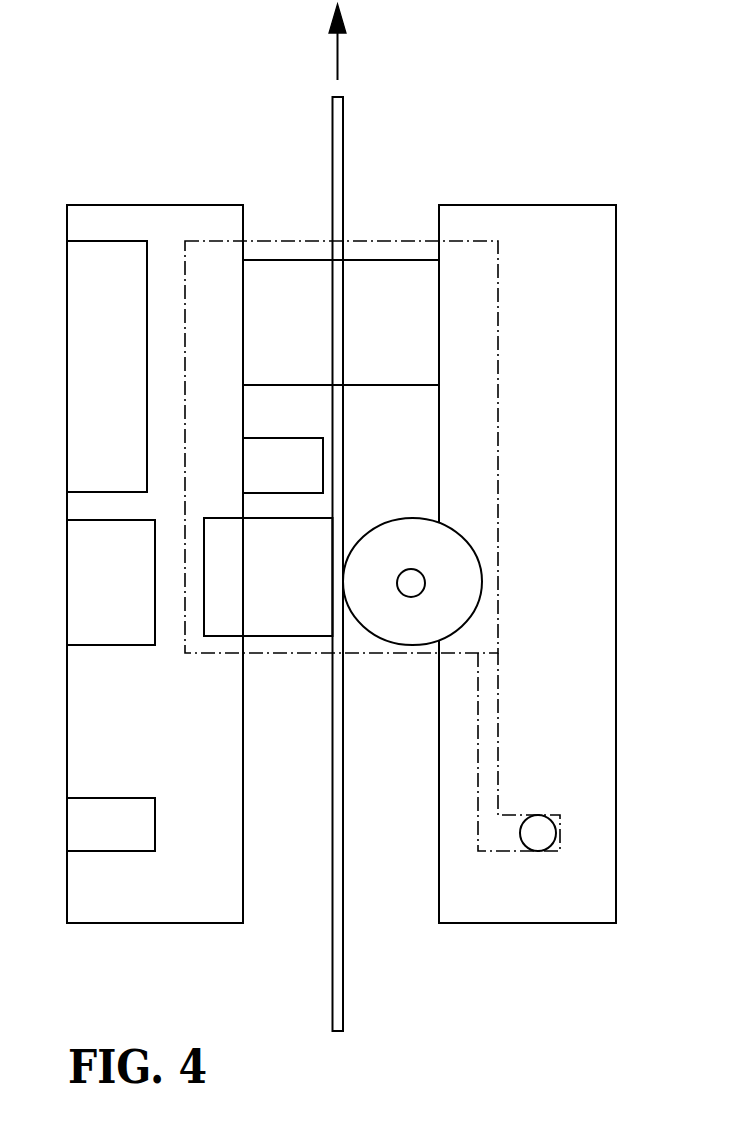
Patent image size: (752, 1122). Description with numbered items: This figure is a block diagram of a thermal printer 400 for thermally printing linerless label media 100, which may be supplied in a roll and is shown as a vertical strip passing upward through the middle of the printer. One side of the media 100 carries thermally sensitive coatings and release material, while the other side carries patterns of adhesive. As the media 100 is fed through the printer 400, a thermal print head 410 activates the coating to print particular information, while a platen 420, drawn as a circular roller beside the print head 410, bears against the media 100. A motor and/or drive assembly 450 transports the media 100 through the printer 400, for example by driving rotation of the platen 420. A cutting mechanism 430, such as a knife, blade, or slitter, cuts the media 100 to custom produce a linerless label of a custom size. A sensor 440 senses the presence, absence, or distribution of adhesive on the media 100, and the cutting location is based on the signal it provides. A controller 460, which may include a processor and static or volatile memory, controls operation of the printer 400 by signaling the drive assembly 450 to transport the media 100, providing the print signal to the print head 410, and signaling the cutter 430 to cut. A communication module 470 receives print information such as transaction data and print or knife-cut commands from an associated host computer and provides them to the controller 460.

The thermal printer 400 is at (455, 78).
The linerless label media 100 is at (332, 172).
The thermal print head 410 is at (292, 591).
The platen 420 is at (435, 558).
The cutting mechanism 430 is at (429, 331).
The sensor 440 is at (305, 478).
The motor and/or drive assembly 450 is at (135, 594).
The controller 460 is at (130, 379).
The communication module 470 is at (135, 839).